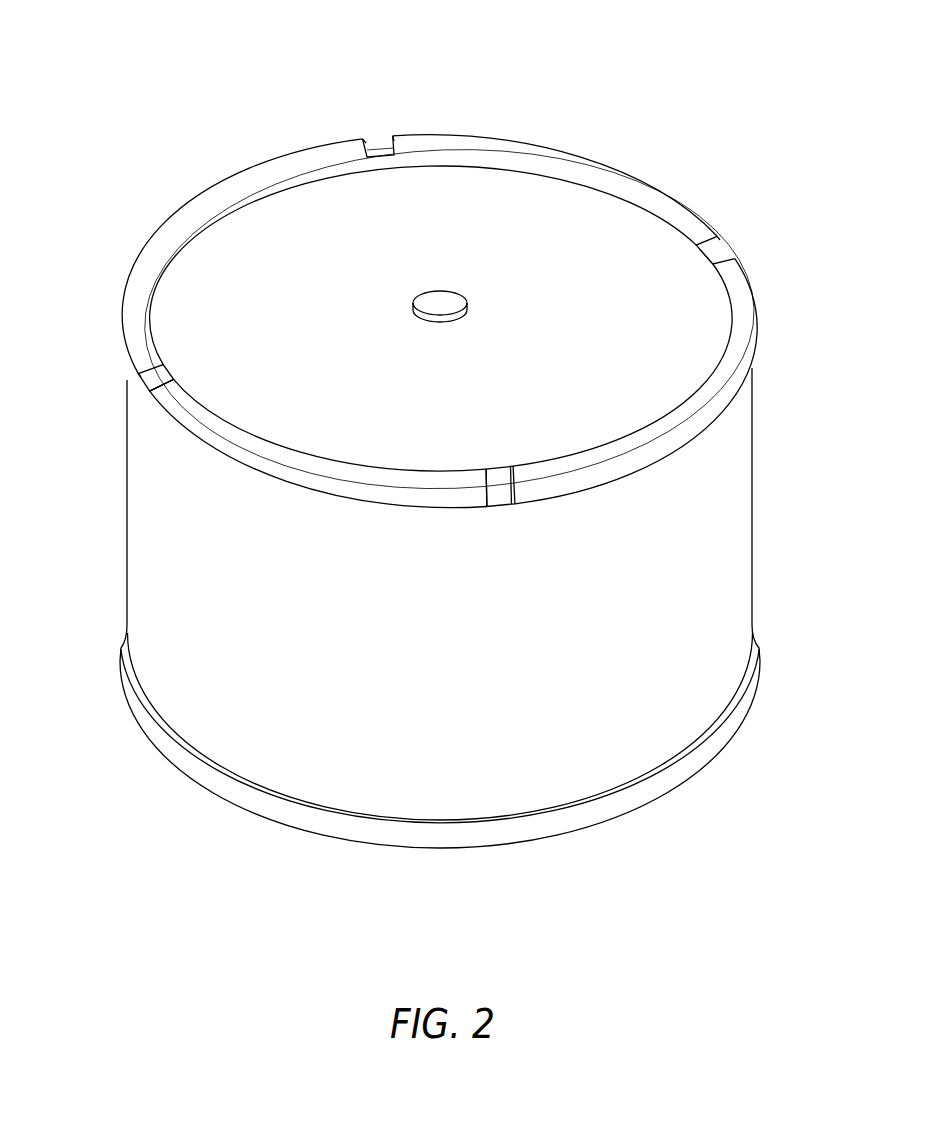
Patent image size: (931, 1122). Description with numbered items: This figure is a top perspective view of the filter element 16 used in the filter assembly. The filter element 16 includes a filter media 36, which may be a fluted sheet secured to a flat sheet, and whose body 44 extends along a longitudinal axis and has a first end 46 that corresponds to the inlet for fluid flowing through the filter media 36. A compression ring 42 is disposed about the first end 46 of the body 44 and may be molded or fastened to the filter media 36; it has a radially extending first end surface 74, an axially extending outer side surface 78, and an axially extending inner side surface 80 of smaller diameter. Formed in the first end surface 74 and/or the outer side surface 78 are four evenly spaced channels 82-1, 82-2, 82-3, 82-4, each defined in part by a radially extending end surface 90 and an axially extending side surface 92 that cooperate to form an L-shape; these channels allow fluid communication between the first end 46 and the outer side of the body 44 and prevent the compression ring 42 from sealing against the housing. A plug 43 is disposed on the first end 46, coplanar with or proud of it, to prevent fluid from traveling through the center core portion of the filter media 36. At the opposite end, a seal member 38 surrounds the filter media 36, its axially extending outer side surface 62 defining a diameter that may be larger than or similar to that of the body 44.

The filter element 16 is at (137, 57).
The filter media 36 is at (773, 454).
The seal member 38 is at (688, 788).
The compression ring 42 is at (179, 203).
The plug 43 is at (438, 303).
The body 44 is at (149, 559).
The first end 46 is at (528, 200).
The outer side surface 62 is at (228, 785).
The first end surface 74 is at (628, 178).
The outer side surface 78 is at (318, 483).
The inner side surface 80 is at (655, 207).
The channel 82-1 is at (375, 131).
The channel 82-2 is at (741, 241).
The channel 82-3 is at (489, 469).
The channel 82-4 is at (171, 371).
The end surface 90 is at (388, 142).
The side surface 92 is at (150, 393).